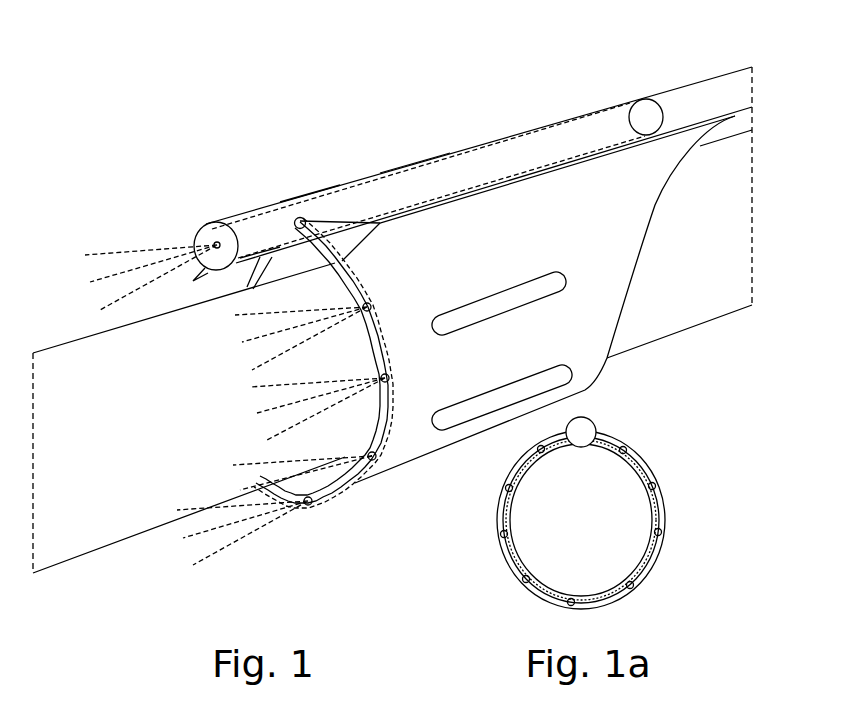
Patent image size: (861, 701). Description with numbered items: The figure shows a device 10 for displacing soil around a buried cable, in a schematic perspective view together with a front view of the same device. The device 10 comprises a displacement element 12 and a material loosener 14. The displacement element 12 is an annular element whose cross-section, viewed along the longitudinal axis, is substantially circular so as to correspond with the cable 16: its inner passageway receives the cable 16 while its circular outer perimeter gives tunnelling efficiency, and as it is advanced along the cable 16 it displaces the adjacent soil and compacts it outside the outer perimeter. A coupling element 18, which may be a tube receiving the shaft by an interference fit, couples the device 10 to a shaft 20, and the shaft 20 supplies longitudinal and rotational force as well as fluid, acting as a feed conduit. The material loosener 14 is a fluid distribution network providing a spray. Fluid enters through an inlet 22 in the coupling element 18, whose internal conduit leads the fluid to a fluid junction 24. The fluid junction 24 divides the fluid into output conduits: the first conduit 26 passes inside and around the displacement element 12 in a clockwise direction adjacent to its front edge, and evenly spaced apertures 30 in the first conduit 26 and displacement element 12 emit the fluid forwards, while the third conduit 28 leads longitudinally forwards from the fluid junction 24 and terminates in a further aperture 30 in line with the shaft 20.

In FIG. 1, the device 10 is at (498, 108).
In FIG. 1, the displacement element 12 is at (418, 437).
In FIG. 1, the material loosener 14 is at (323, 407).
In FIG. 1, the cable 16 is at (752, 277).
In FIG. 1, the coupling element 18 is at (630, 123).
In FIG. 1, the shaft 20 is at (692, 107).
In FIG. 1, the inlet 22 is at (408, 163).
In FIG. 1, the fluid junction 24 is at (307, 193).
In FIG. 1, the first conduit 26 is at (378, 479).
In FIG. 1, the third conduit 28 is at (257, 233).
In FIG. 1, the apertures 30 is at (214, 244).
In FIG. 1A, the apertures 30 is at (663, 477).